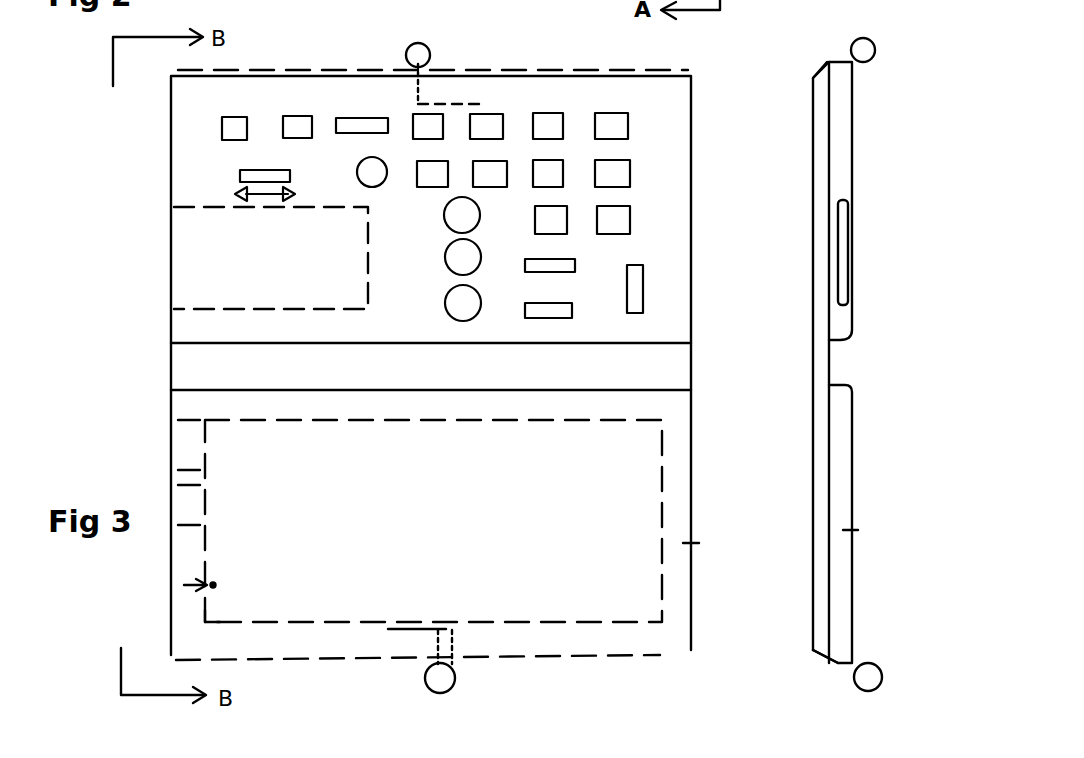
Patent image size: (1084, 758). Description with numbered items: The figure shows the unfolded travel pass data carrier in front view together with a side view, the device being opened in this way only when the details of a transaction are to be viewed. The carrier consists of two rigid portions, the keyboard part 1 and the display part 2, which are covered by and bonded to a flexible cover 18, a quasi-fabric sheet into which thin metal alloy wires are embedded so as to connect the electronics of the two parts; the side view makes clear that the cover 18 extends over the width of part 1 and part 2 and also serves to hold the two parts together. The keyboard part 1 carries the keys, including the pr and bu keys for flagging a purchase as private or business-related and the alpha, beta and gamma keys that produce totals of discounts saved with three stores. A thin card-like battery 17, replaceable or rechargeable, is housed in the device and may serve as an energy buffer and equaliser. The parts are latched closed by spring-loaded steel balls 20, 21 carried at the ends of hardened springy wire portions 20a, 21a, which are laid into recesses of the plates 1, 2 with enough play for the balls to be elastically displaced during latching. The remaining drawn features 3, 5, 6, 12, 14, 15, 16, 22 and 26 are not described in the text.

The keyboard part 1 is at (184, 130).
The display part 2 is at (850, 530).
The keypad / operating buttons 3 is at (547, 107).
The display 5 is at (620, 586).
The gap 6 is at (222, 585).
The top edge 12 is at (348, 71).
The dimension 14 is at (191, 505).
The dimension 15 is at (191, 445).
The stem 16 is at (410, 88).
The card-like battery 17 is at (155, 268).
The flexible cover 18 is at (822, 375).
The spring-loaded steel ball 20 is at (407, 58).
The springy wire portion 20a is at (462, 100).
The spring-loaded steel ball 21 is at (450, 692).
The springy wire portion 21a is at (405, 632).
The bottom edge 22 is at (592, 665).
The peg 26 is at (462, 648).